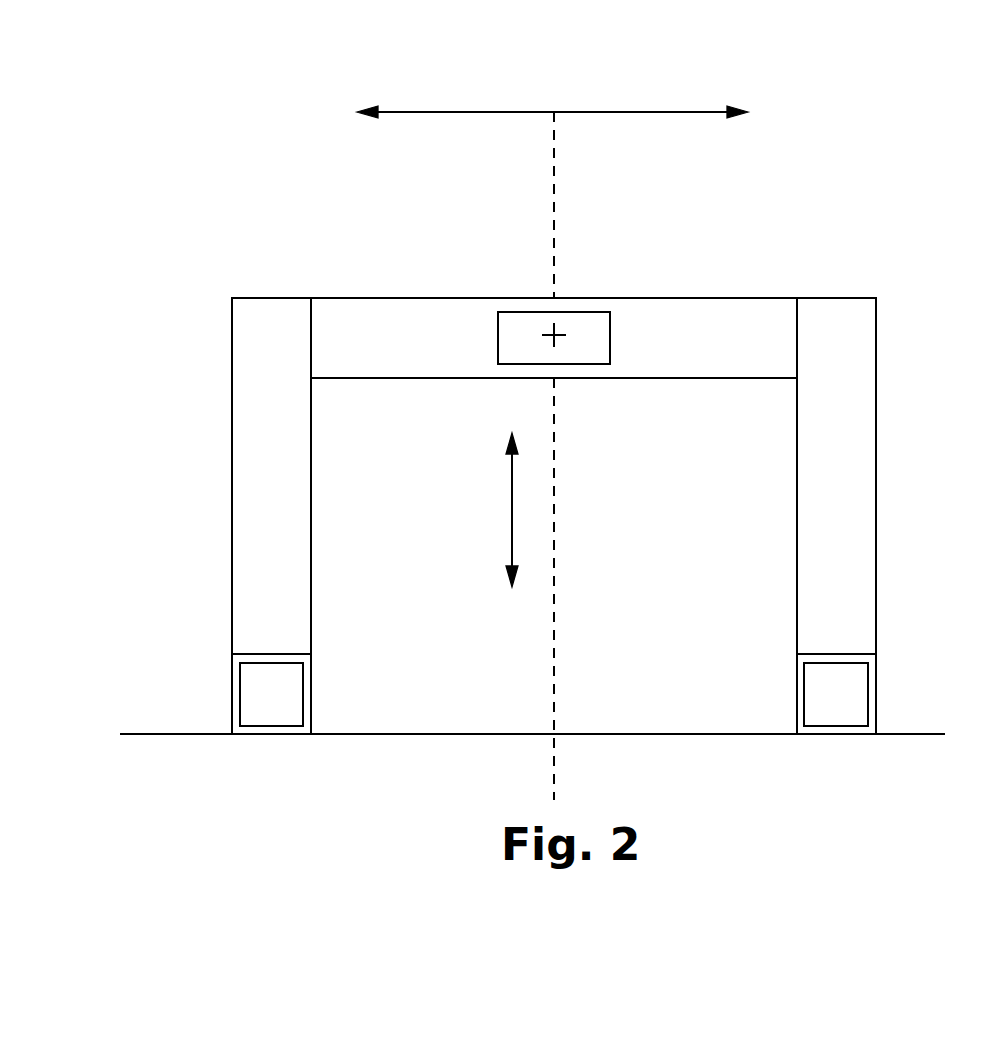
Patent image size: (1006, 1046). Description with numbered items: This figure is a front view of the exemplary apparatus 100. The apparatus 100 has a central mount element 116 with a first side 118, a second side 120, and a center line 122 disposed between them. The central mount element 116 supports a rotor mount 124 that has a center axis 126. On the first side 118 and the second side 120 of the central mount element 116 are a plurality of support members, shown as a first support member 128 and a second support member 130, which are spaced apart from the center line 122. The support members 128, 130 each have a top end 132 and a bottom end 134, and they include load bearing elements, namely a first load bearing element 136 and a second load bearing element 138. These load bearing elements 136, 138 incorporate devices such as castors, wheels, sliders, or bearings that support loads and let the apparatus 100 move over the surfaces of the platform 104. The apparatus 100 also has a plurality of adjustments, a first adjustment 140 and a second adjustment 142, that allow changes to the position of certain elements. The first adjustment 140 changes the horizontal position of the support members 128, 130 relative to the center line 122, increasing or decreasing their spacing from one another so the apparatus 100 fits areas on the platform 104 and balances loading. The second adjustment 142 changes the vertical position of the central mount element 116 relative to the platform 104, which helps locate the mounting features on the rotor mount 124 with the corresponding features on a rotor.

The apparatus 100 is at (918, 216).
The platform 104 is at (917, 734).
The central mount element 116 is at (678, 280).
The first side 118 is at (768, 280).
The second side 120 is at (375, 281).
The center line 122 is at (554, 190).
The rotor mount 124 is at (582, 312).
The center axis 126 is at (554, 335).
The first support member 128 is at (850, 342).
The second support member 130 is at (270, 325).
The top end 132 is at (200, 373).
The bottom end 134 is at (208, 631).
The first load bearing element 136 is at (838, 705).
The second load bearing element 138 is at (273, 705).
The first adjustment 140 is at (518, 112).
The second adjustment 142 is at (512, 508).